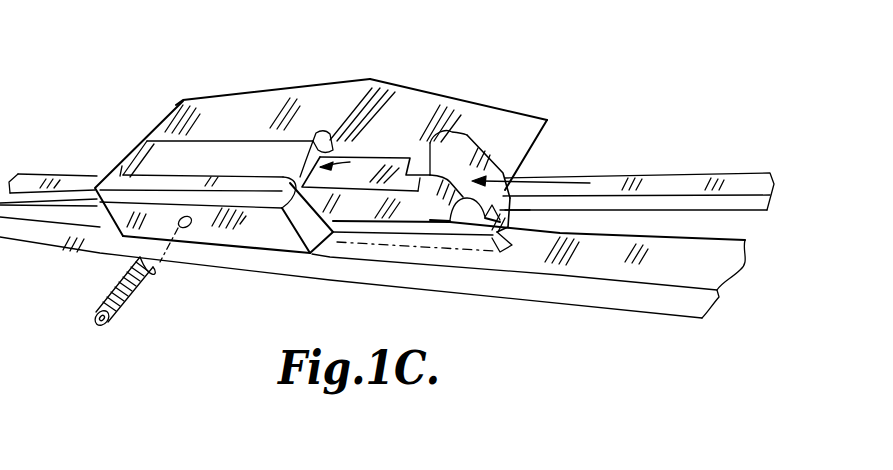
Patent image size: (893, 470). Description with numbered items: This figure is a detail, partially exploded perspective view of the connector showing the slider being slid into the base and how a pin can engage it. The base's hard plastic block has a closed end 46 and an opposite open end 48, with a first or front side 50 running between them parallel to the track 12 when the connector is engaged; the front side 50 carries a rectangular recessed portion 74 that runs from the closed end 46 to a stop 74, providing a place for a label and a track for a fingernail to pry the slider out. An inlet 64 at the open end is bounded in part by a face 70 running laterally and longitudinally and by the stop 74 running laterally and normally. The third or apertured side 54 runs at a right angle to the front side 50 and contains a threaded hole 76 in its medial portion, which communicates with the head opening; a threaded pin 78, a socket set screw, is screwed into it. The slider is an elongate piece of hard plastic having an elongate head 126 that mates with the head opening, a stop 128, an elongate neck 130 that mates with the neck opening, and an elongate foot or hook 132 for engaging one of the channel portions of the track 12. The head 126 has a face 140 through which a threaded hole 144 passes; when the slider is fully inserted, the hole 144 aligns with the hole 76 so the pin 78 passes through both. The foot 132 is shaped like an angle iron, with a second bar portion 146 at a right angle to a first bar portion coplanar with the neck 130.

The track 12 is at (677, 174).
The closed end 46 is at (168, 117).
The open end 48 is at (300, 236).
The first or front side 50 is at (230, 118).
The third or apertured side 54 is at (243, 223).
The inlet 64 is at (393, 157).
The face 70 is at (367, 120).
The stop / recessed portion 74 is at (167, 160).
The threaded hole 76 is at (178, 221).
The threaded pin 78 is at (131, 316).
The head 126 is at (460, 142).
The stop 128 is at (407, 165).
The neck 130 is at (463, 203).
The foot or hook 132 is at (508, 226).
The face 140 is at (380, 207).
The threaded hole 144 is at (520, 218).
The second bar portion 146 is at (507, 247).